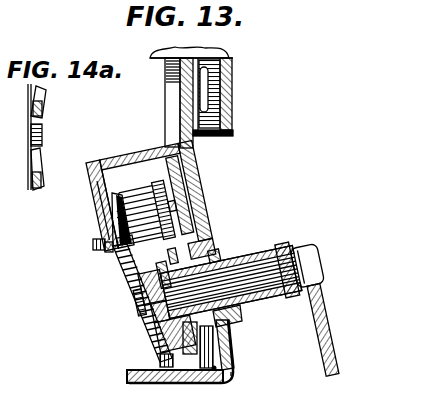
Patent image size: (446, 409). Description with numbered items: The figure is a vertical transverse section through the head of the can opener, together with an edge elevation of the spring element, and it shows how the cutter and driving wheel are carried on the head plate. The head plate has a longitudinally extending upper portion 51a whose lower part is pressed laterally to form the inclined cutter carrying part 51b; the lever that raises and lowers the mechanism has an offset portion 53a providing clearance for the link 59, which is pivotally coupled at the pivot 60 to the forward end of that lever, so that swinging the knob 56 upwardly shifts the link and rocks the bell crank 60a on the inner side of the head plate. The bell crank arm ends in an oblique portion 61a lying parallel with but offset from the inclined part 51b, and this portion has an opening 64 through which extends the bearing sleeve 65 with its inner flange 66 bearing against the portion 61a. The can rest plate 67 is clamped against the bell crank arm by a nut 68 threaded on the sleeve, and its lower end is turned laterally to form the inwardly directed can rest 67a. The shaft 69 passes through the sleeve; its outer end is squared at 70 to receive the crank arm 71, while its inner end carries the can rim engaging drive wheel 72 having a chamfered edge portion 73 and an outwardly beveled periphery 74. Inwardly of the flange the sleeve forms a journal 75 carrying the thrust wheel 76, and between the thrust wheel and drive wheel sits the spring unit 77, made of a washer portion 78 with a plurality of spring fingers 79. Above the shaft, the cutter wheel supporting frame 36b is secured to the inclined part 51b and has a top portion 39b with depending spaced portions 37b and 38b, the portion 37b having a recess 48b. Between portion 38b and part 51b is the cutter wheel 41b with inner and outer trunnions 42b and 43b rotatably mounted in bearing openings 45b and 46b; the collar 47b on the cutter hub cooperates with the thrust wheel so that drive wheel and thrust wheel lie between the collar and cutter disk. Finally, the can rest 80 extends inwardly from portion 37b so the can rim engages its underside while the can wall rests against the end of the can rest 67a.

In FIG. 13, the cutter wheel supporting frame 36b is at (103, 163).
In FIG. 13, the depending portion 37b is at (196, 157).
In FIG. 13, the depending portion 38b is at (98, 196).
In FIG. 13, the top portion 39b is at (150, 148).
In FIG. 13, the cutter wheel 41b is at (100, 218).
In FIG. 13, the inner trunnion 42b is at (92, 243).
In FIG. 13, the outer trunnion 43b is at (205, 205).
In FIG. 13, the bearing opening 45b is at (97, 237).
In FIG. 13, the bearing opening 46b is at (212, 222).
In FIG. 13, the collar 47b is at (152, 186).
In FIG. 13, the recess 48b is at (210, 175).
In FIG. 13, the upper portion 51a is at (172, 88).
In FIG. 13, the inclined cutter carrying part 51b is at (204, 184).
In FIG. 13, the offset portion 53a is at (226, 93).
In FIG. 13, the knob 56 is at (222, 52).
In FIG. 13, the link 59 is at (236, 57).
In FIG. 13, the pivot 60 is at (206, 88).
In FIG. 13, the bell crank 60a is at (166, 68).
In FIG. 13, the oblique portion 61a is at (231, 376).
In FIG. 13, the opening 64 is at (235, 363).
In FIG. 13, the bearing sleeve 65 is at (262, 263).
In FIG. 13, the flange 66 is at (207, 383).
In FIG. 13, the can rest plate 67 is at (229, 342).
In FIG. 13, the can rest 67a is at (127, 373).
In FIG. 13, the nut 68 is at (213, 260).
In FIG. 13, the shaft 69 is at (291, 253).
In FIG. 13, the squared end 70 is at (300, 273).
In FIG. 13, the crank arm 71 is at (322, 335).
In FIG. 13, the drive wheel 72 is at (130, 285).
In FIG. 13, the chamfered edge portion 73 is at (140, 300).
In FIG. 13, the beveled periphery 74 is at (156, 303).
In FIG. 13, the journal 75 is at (152, 340).
In FIG. 13, the thrust wheel 76 is at (183, 380).
In FIG. 13, the spring unit 77 is at (135, 276).
In FIG. 14a, the spring unit 77 is at (24, 114).
In FIG. 14a, the washer portion 78 is at (29, 128).
In FIG. 13, the spring fingers 79 is at (160, 362).
In FIG. 14a, the spring fingers 79 is at (24, 120).
In FIG. 13, the can rest 80 is at (112, 251).